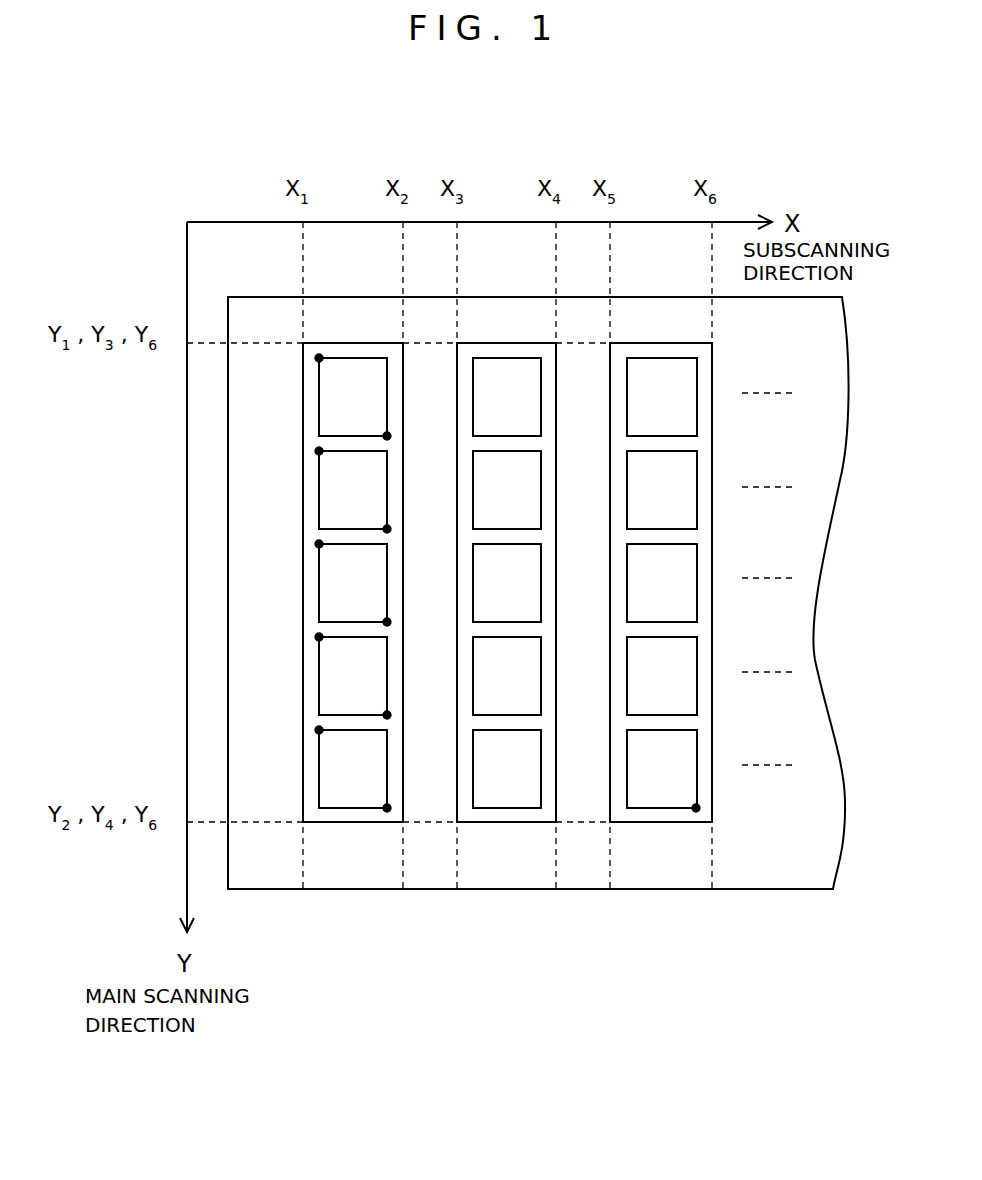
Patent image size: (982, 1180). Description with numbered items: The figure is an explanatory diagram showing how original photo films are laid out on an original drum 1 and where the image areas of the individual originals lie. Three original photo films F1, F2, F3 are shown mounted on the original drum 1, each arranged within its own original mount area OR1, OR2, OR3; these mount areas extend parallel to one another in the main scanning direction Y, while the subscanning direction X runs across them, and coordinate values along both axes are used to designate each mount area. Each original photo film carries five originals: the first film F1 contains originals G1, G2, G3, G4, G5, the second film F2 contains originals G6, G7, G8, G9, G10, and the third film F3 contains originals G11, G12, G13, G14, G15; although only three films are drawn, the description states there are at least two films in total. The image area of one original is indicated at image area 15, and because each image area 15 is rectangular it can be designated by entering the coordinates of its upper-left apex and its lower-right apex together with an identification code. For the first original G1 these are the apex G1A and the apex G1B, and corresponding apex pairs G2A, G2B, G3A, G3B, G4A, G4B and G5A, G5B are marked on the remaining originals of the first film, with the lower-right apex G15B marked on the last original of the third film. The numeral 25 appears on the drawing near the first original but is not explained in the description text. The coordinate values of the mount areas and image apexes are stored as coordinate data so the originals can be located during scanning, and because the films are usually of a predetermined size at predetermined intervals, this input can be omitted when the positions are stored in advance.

The original drum 1 is at (770, 889).
The image area 15 is at (697, 417).
The pixel block 25 is at (387, 382).
The original photo film F1 is at (352, 808).
The original photo film F2 is at (508, 808).
The original photo film F3 is at (664, 808).
The original mount area OR1 is at (380, 875).
The original mount area OR2 is at (540, 875).
The original mount area OR3 is at (688, 875).
The original G1 is at (353, 397).
The original G2 is at (353, 490).
The original G3 is at (353, 583).
The original G4 is at (353, 676).
The original G5 is at (353, 769).
The original G6 is at (507, 397).
The original G7 is at (507, 490).
The original G8 is at (507, 583).
The original G9 is at (507, 676).
The original G10 is at (507, 769).
The original G11 is at (662, 397).
The original G12 is at (662, 490).
The original G13 is at (662, 583).
The original G14 is at (662, 676).
The original G15 is at (662, 769).
The upper-left apex G1A is at (319, 358).
The lower-right apex G1B is at (387, 436).
The upper-left apex G2A is at (319, 451).
The lower-right apex G2B is at (387, 529).
The upper-left apex G3A is at (319, 544).
The lower-right apex G3B is at (387, 622).
The upper-left apex G4A is at (319, 637).
The lower-right apex G4B is at (387, 715).
The upper-left apex G5A is at (319, 730).
The lower-right apex G5B is at (387, 808).
The lower-right apex G15B is at (696, 808).